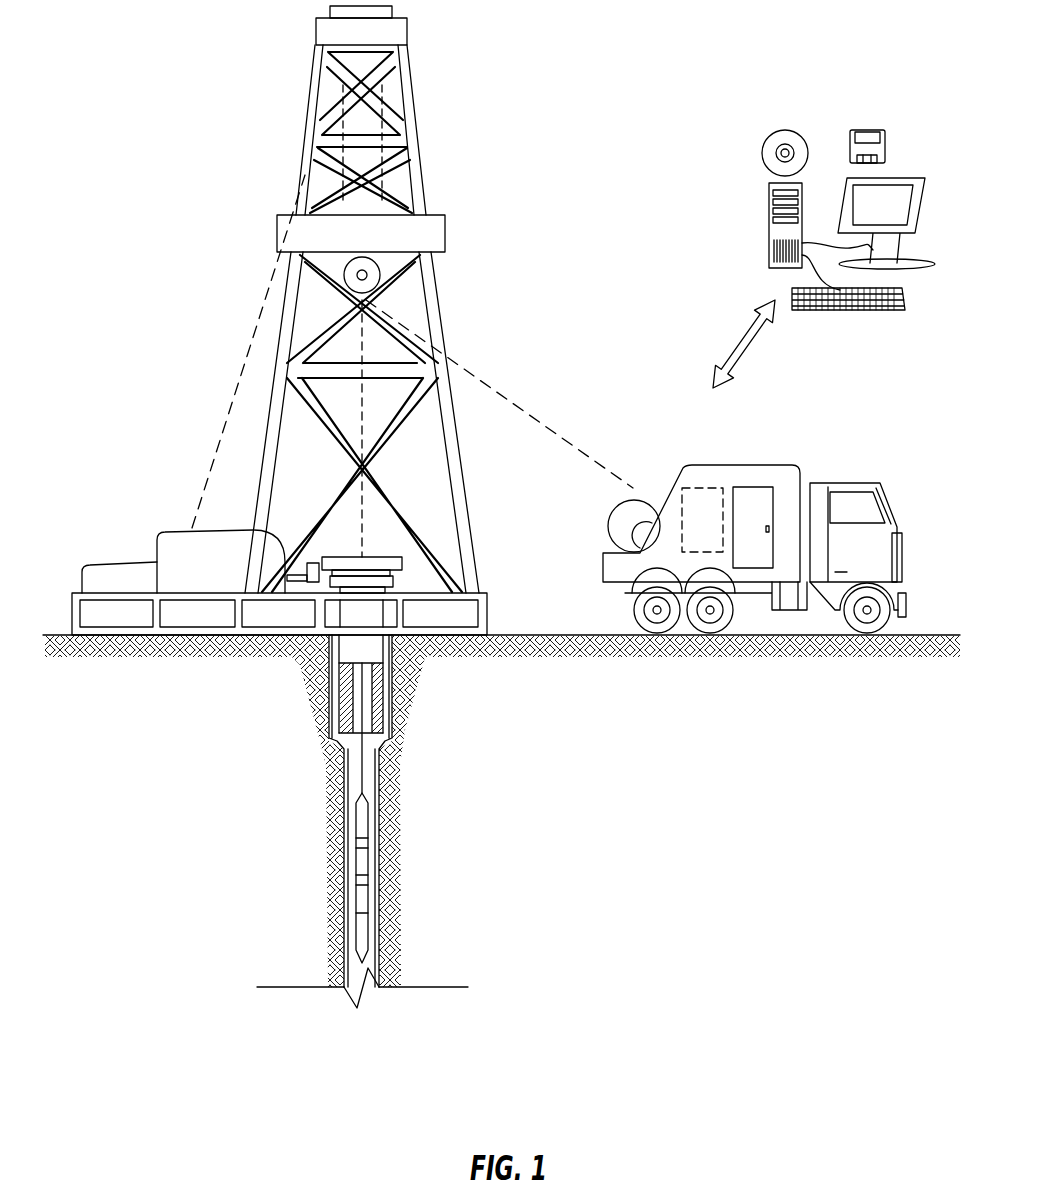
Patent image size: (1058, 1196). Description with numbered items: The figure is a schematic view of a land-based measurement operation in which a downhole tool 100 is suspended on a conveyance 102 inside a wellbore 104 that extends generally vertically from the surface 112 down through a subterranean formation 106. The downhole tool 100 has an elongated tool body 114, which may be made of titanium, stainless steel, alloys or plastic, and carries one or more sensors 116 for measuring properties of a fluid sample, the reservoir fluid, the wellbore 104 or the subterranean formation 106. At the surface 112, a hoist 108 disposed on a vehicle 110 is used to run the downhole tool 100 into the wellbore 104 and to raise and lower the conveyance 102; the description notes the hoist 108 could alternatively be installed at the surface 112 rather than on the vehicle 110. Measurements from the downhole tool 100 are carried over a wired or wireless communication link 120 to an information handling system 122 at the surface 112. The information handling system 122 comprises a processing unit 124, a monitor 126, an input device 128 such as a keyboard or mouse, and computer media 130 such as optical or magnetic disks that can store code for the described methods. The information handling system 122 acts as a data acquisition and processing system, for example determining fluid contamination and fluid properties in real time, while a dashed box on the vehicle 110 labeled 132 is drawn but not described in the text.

The downhole tool 100 is at (372, 882).
The conveyance 102 is at (359, 760).
The wellbore 104 is at (340, 815).
The subterranean formation 106 is at (563, 819).
The hoist 108 is at (608, 518).
The vehicle 110 is at (721, 523).
The surface 112 is at (915, 635).
The tool body 114 is at (348, 902).
The sensors 116 is at (368, 917).
The communication link 120 is at (750, 350).
The information handling system 122 is at (783, 224).
The processing unit 124 is at (769, 196).
The monitor 126 is at (900, 178).
The input device 128 is at (886, 312).
The computer media 130 is at (870, 130).
The surface controller 132 is at (700, 488).